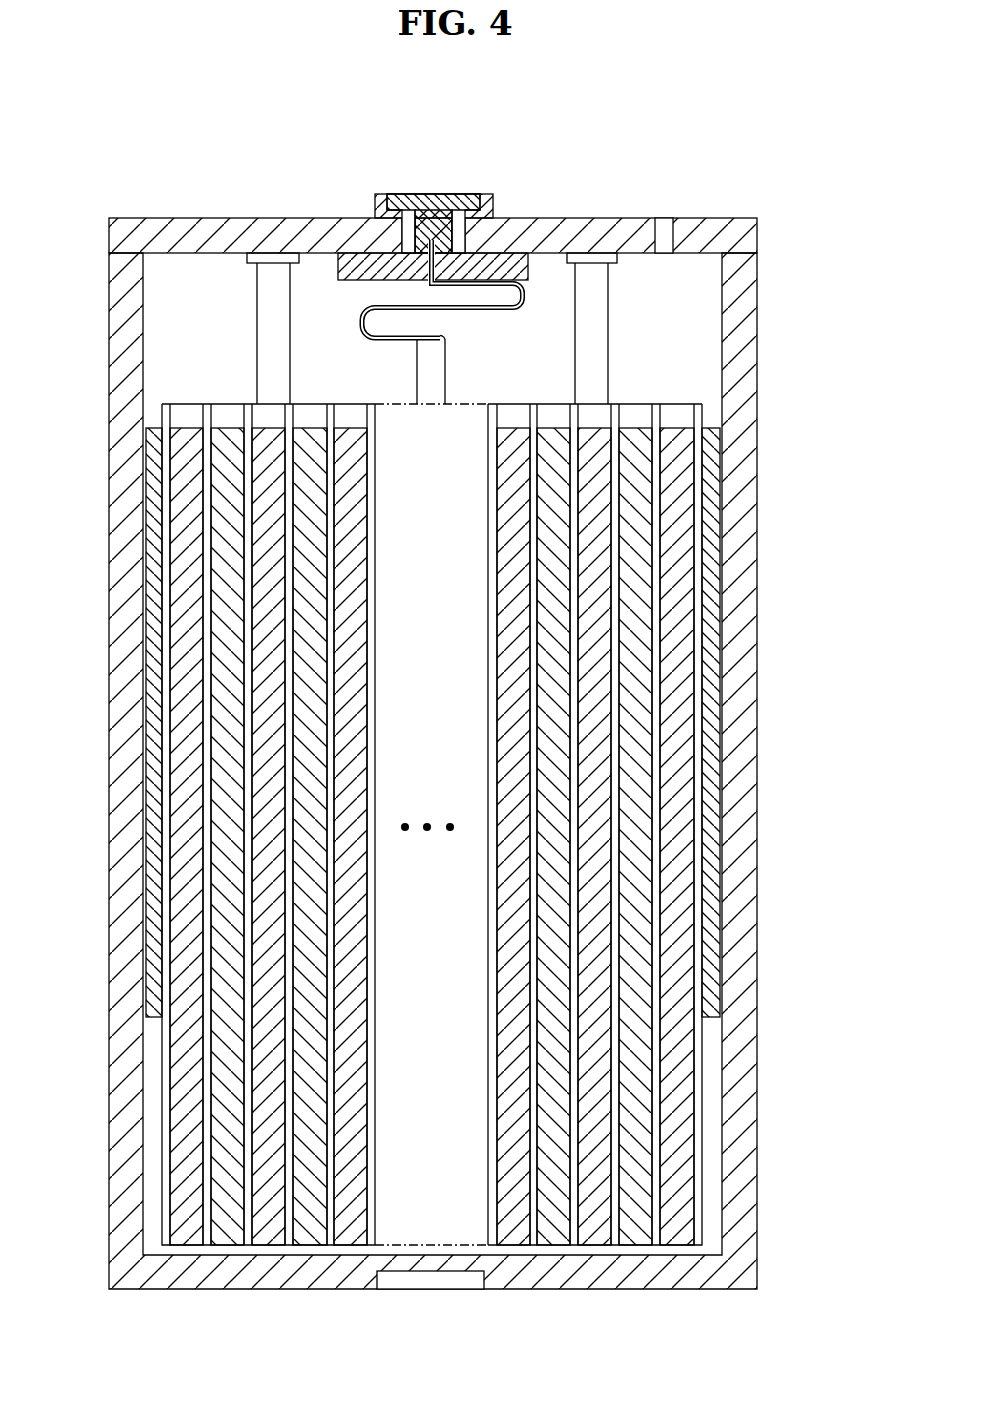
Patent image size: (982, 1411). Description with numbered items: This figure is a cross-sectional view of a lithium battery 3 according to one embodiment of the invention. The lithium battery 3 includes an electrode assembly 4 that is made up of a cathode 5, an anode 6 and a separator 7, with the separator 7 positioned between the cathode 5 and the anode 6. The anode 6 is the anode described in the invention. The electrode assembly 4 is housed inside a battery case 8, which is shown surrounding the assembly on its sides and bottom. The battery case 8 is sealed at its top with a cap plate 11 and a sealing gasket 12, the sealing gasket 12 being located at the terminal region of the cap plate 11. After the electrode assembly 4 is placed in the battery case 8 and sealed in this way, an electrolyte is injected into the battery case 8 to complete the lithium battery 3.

The lithium battery 3 is at (463, 718).
The electrode assembly 4 is at (431, 782).
The cathode 5 is at (685, 1162).
The anode 6 is at (220, 1062).
The separator 7 is at (165, 1163).
The battery case 8 is at (110, 372).
The cap plate 11 is at (561, 226).
The sealing gasket 12 is at (383, 198).